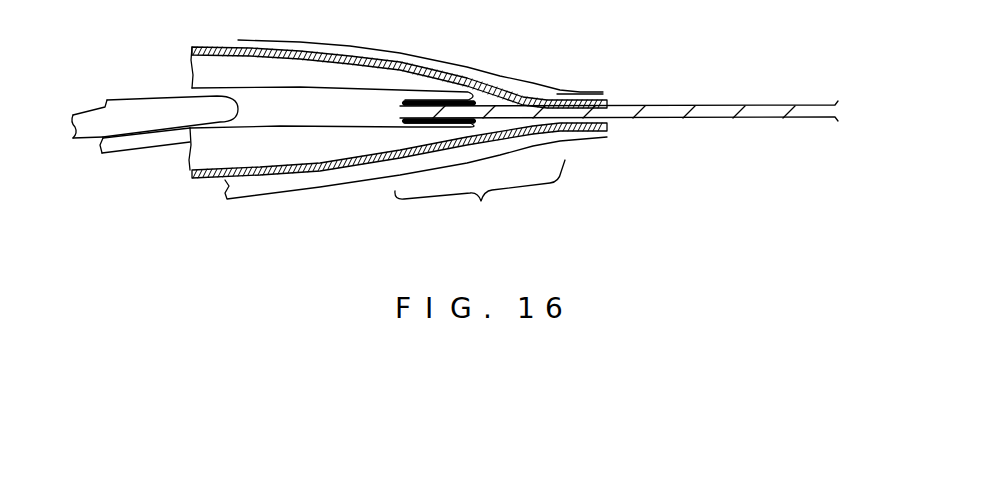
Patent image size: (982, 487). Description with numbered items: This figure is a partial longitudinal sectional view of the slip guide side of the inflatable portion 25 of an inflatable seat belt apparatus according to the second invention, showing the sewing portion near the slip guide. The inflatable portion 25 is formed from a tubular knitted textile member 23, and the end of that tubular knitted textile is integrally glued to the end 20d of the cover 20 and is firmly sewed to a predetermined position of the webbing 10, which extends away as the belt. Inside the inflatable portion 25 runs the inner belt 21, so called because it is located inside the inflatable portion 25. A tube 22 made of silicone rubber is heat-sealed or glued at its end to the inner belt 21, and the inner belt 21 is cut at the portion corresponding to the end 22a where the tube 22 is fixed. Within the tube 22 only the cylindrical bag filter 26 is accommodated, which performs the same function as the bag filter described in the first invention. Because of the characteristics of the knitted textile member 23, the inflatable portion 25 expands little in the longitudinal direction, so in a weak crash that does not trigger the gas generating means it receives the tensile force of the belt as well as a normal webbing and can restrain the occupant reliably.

The webbing 10 is at (737, 106).
The cover 20 is at (462, 59).
The end of the cover 20d is at (603, 92).
The inner belt 21 is at (480, 198).
The tube 22 is at (158, 96).
The end of the tube 22a is at (433, 127).
The knitted textile member 23 is at (222, 45).
The inflatable portion 25 is at (379, 38).
The cylindrical bag filter 26 is at (80, 143).